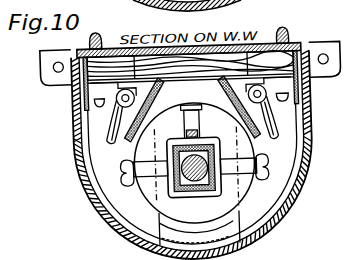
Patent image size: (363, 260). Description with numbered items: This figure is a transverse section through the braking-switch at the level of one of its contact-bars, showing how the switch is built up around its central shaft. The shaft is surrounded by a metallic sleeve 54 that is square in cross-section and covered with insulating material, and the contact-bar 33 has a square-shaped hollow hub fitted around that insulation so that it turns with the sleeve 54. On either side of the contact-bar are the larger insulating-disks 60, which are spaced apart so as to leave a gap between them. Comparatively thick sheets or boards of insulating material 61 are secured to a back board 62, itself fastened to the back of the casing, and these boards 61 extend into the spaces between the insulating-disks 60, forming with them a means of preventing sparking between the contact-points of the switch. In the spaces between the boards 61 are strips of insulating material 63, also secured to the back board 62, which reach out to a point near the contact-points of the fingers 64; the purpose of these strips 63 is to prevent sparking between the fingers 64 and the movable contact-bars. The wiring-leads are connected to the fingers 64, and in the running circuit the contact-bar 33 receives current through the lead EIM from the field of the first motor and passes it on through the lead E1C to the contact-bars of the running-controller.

The contact-bar 33 is at (194, 167).
The sleeve 54 is at (218, 193).
The insulating-disks 60 is at (195, 163).
The sheets or boards of insulating material 61 is at (193, 221).
The back board 62 is at (193, 115).
The strips of insulating material 63 is at (192, 108).
The fingers 64 is at (282, 116).
The lead E1C is at (120, 171).
The lead EIM is at (270, 167).